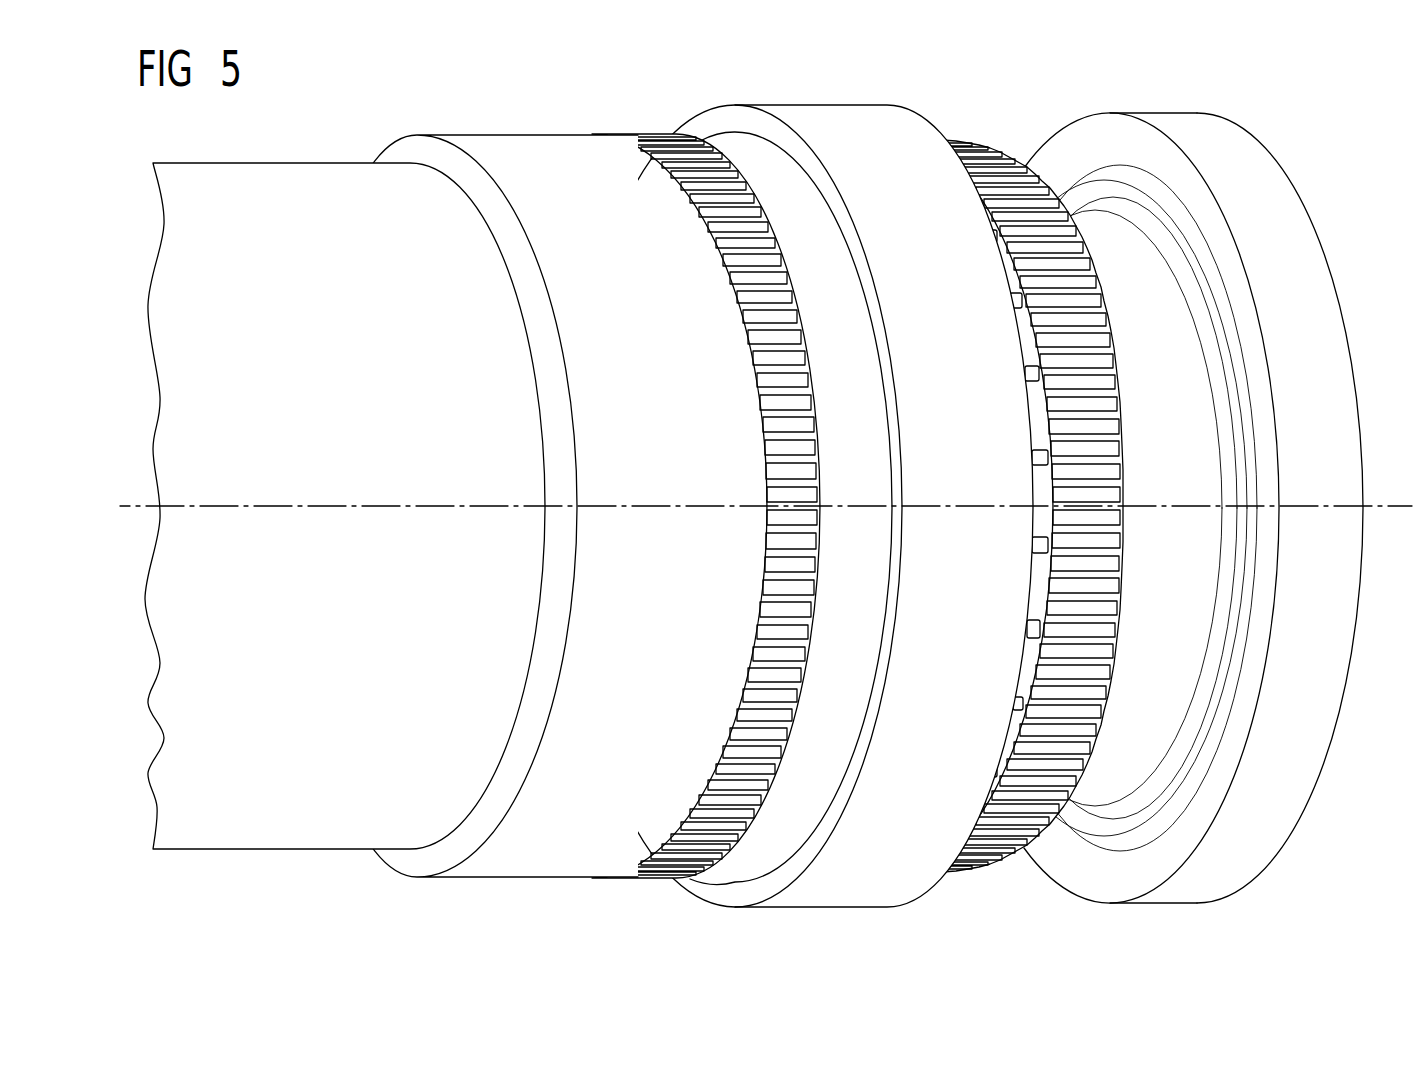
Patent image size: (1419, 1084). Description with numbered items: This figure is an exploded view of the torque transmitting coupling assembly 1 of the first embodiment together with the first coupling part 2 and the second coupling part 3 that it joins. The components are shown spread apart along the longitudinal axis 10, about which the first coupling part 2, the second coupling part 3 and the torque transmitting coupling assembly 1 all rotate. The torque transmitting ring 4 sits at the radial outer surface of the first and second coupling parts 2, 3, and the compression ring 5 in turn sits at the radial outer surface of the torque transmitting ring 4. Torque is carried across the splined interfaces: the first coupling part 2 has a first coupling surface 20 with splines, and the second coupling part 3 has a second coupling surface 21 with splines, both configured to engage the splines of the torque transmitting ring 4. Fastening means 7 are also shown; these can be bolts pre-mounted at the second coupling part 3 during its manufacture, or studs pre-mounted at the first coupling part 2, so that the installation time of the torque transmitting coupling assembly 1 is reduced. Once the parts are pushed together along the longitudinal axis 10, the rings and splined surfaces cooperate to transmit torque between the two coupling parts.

The torque transmitting coupling assembly 1 is at (1329, 131).
The first coupling part 2 is at (342, 176).
The second coupling part 3 is at (1186, 126).
The torque transmitting ring 4 is at (726, 144).
The compression ring 5 is at (838, 127).
The fastening means 7 is at (1034, 458).
The longitudinal axis 10 is at (1402, 506).
The first coupling surface 20 is at (733, 803).
The second coupling surface 21 is at (1026, 792).